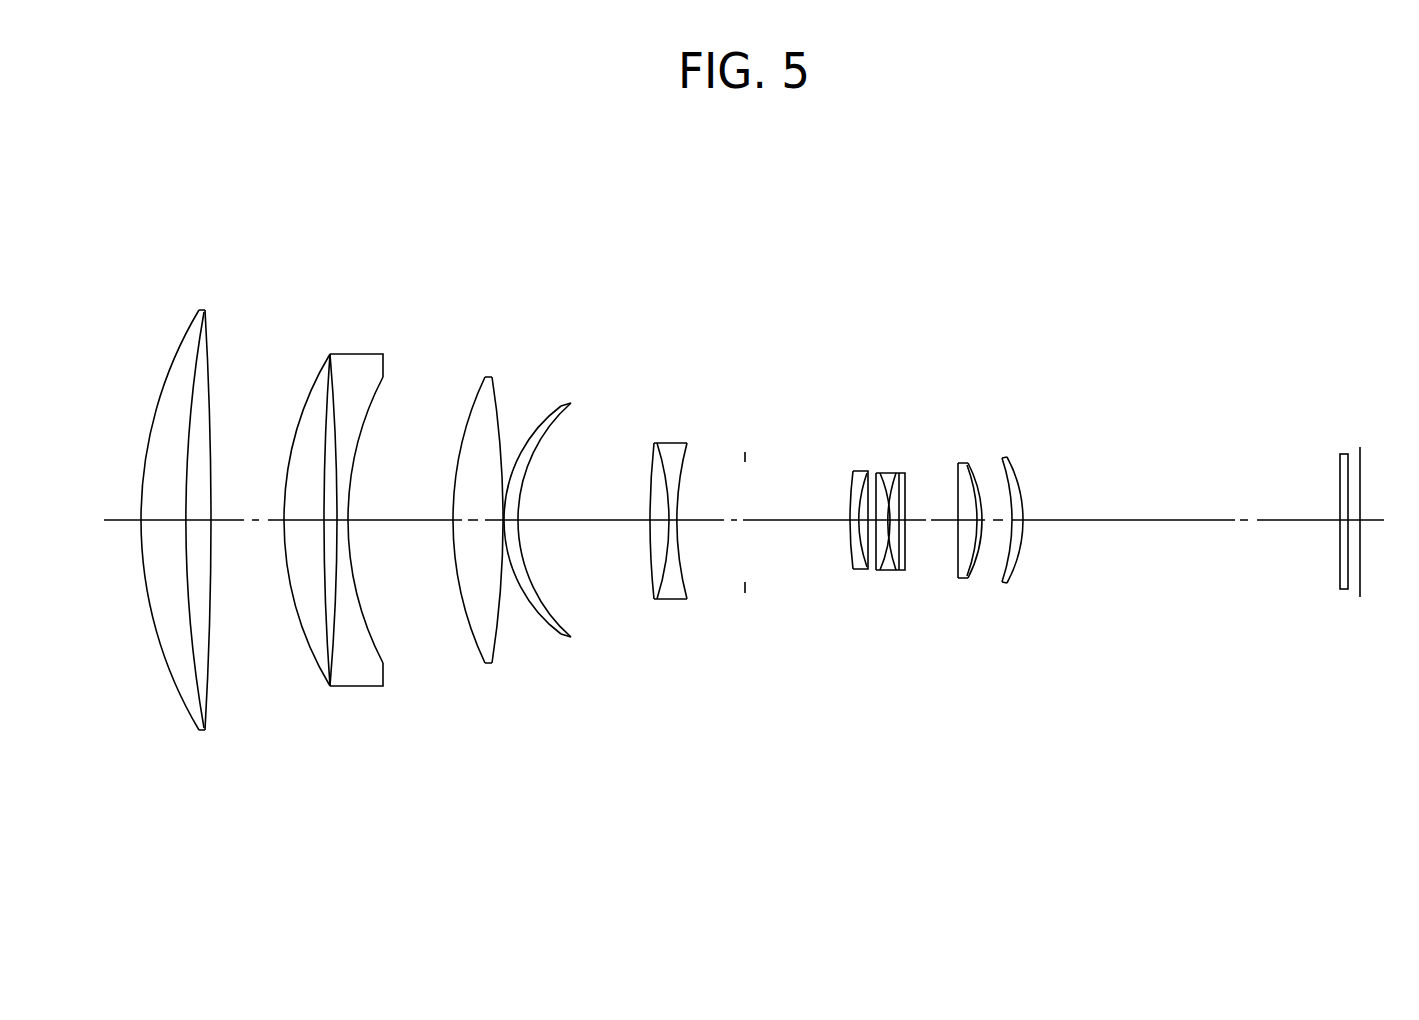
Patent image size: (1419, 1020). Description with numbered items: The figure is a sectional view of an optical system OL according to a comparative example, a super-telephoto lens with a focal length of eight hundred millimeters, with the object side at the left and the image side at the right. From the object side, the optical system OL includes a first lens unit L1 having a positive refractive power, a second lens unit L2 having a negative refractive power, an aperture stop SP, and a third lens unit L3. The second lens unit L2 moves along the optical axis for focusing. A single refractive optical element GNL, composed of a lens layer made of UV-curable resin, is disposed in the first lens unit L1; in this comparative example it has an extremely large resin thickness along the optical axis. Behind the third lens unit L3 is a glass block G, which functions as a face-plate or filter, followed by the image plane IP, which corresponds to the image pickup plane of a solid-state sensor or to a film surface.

The optical system OL is at (1036, 252).
The first lens unit L1 is at (597, 733).
The refractive optical element GNL is at (202, 392).
The second lens unit L2 is at (706, 608).
The aperture stop SP is at (745, 455).
The third lens unit L3 is at (1036, 607).
The glass block G is at (1340, 454).
The image plane IP is at (1360, 465).